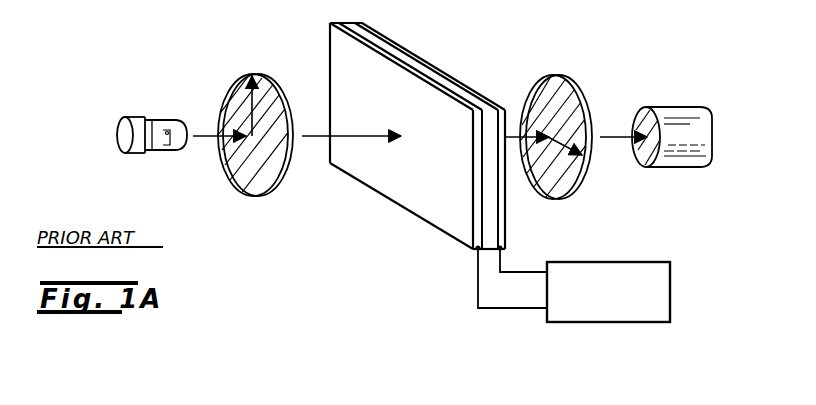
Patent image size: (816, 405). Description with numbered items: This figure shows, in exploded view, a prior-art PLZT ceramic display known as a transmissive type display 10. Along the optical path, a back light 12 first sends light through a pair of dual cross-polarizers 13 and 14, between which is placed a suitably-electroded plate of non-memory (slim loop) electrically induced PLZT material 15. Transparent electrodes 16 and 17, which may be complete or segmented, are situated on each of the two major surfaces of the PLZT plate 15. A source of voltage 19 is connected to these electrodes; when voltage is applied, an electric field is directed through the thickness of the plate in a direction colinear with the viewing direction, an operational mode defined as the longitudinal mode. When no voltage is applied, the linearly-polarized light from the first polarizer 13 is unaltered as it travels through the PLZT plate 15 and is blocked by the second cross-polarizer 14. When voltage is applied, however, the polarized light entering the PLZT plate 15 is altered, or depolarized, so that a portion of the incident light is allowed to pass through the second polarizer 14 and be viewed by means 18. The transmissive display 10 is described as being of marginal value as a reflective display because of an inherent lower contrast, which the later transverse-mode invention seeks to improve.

The transmissive type display 10 is at (655, 34).
The back light 12 is at (118, 134).
The first cross-polarizer 13 is at (272, 94).
The second cross-polarizer 14 is at (568, 86).
The PLZT plate 15 is at (375, 180).
The transparent electrode 16 is at (472, 230).
The transparent electrode 17 is at (502, 222).
The viewing means 18 is at (683, 117).
The source of voltage 19 is at (647, 262).